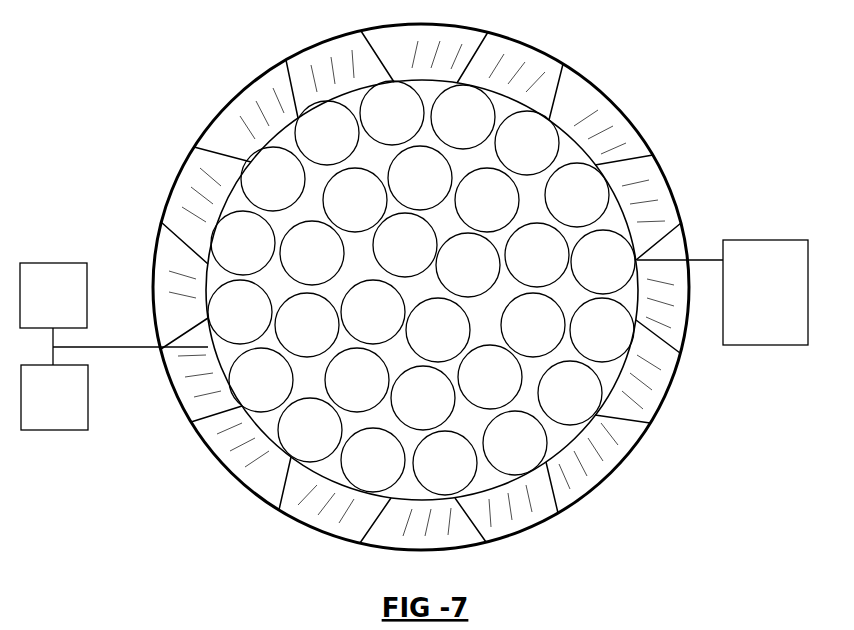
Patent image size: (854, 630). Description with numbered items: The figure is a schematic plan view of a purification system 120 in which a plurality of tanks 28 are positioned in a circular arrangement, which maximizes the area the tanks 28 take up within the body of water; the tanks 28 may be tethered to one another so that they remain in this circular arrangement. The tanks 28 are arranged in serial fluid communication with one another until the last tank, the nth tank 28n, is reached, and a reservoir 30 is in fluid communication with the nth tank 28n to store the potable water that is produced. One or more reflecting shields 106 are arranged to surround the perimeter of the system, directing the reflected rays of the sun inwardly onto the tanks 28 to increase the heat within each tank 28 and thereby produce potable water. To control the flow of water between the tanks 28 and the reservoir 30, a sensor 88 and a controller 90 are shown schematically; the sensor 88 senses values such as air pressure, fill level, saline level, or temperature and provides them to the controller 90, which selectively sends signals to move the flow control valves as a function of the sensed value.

The purification system 120 is at (168, 68).
The reflecting shields 106 is at (160, 304).
The tanks 28 is at (420, 181).
The nth tank 28n is at (438, 330).
The sensor 88 is at (53, 295).
The controller 90 is at (54, 397).
The reservoir 30 is at (765, 292).